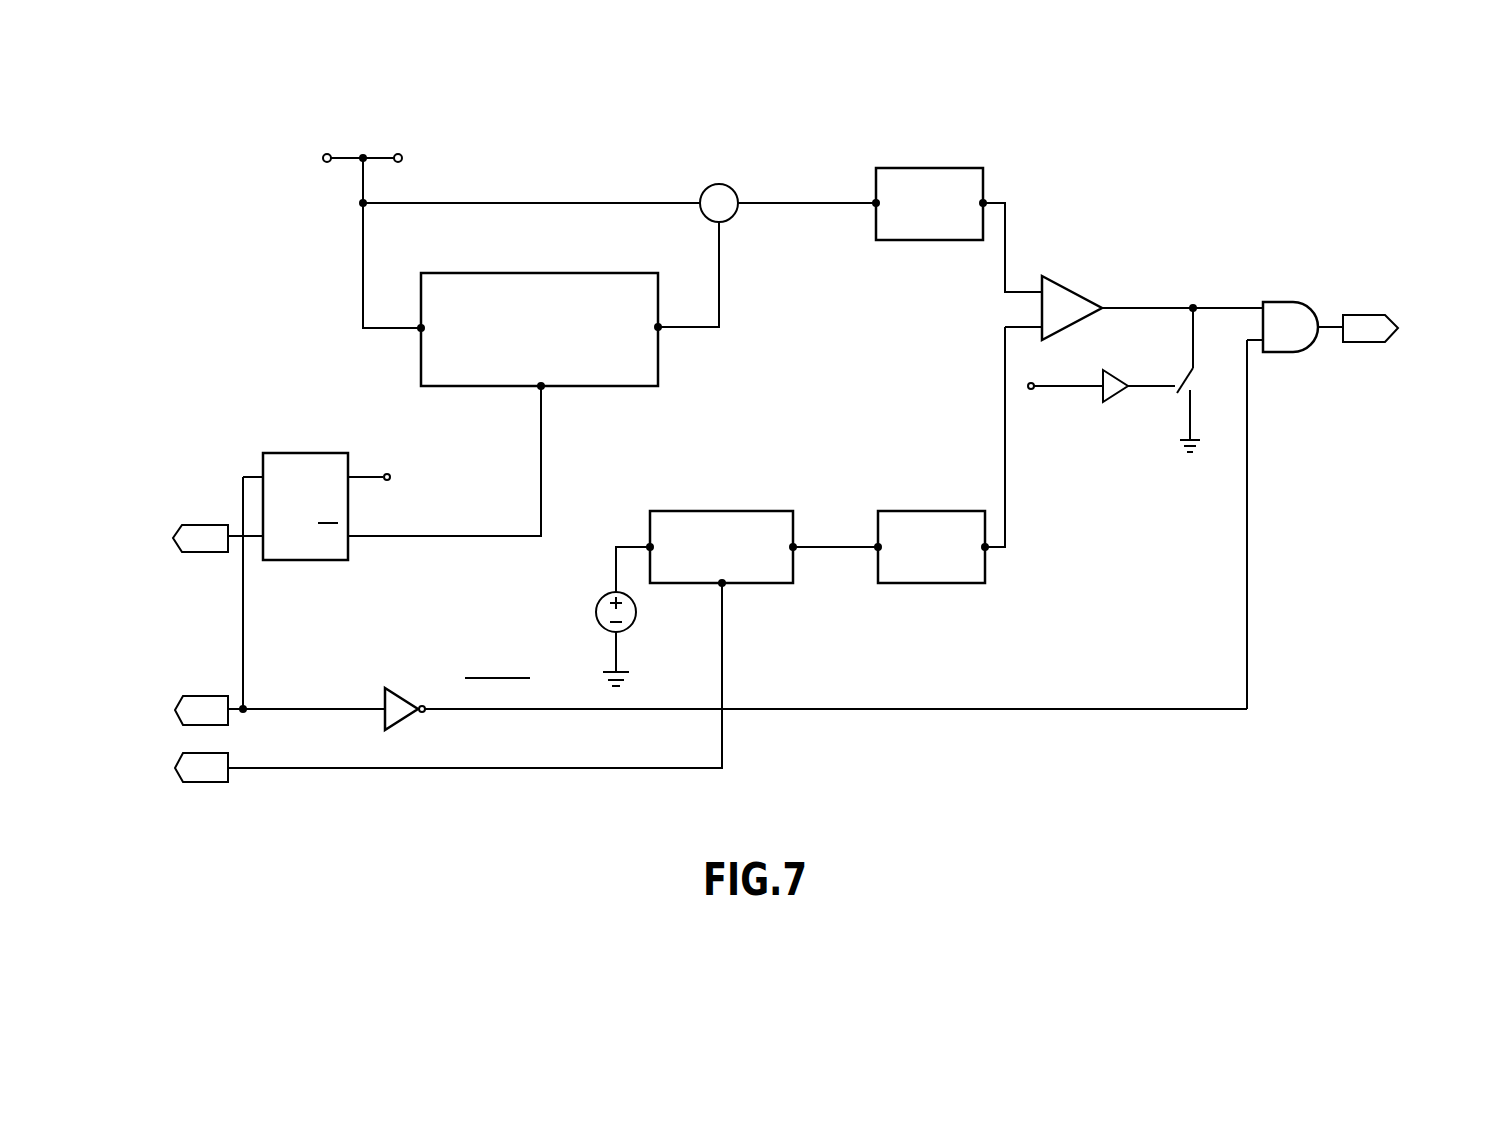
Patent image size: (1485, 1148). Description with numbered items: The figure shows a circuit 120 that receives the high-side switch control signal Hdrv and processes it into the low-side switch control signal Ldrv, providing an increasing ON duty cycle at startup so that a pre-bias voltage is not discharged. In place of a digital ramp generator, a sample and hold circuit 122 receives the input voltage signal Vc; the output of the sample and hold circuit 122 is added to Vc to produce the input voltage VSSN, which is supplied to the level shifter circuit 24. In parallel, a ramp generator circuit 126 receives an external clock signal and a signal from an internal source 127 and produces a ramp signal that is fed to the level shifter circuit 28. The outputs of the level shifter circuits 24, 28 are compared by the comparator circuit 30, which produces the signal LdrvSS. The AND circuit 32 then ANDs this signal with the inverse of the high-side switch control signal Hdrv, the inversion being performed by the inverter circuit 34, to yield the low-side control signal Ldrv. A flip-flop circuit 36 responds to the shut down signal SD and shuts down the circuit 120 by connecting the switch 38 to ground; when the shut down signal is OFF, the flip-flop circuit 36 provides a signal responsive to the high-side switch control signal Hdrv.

The circuit 120 is at (1243, 182).
The sample and hold circuit 122 is at (538, 272).
The level shifter circuit 24 is at (928, 168).
The level shifter circuit 28 is at (927, 583).
The comparator circuit 30 is at (1058, 285).
The AND circuit 32 is at (1277, 302).
The inverter circuit 34 is at (402, 696).
The flip-flop circuit 36 is at (305, 453).
The switch 38 is at (1197, 383).
The ramp generator circuit 126 is at (720, 511).
The internal source 127 is at (603, 598).